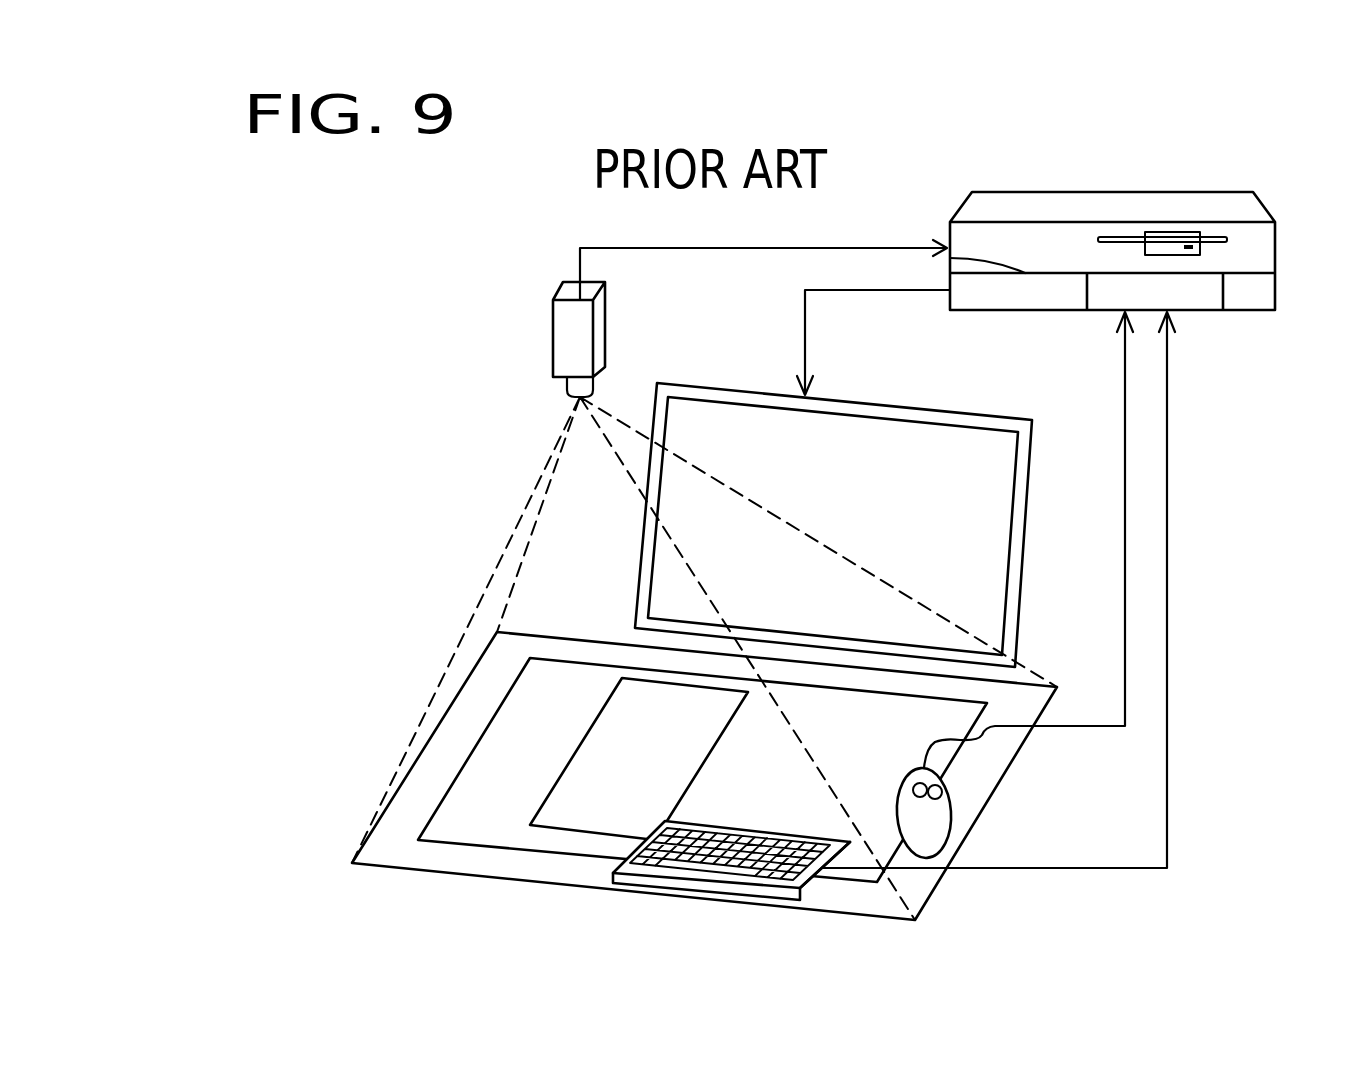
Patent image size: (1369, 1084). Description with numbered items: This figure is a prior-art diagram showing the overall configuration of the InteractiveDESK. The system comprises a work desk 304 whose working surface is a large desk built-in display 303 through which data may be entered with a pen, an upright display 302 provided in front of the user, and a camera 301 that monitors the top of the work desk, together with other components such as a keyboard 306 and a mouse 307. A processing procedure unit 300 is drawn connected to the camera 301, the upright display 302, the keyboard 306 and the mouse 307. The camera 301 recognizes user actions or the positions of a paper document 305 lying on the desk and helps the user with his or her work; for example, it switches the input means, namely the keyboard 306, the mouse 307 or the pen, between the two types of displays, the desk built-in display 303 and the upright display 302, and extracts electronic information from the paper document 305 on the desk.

The processing procedure unit 300 is at (1067, 203).
The camera 301 is at (568, 334).
The upright display 302 is at (882, 437).
The desk built-in display 303 is at (512, 733).
The work desk 304 is at (428, 772).
The document 305 is at (553, 818).
The keyboard 306 is at (703, 877).
The mouse 307 is at (930, 828).